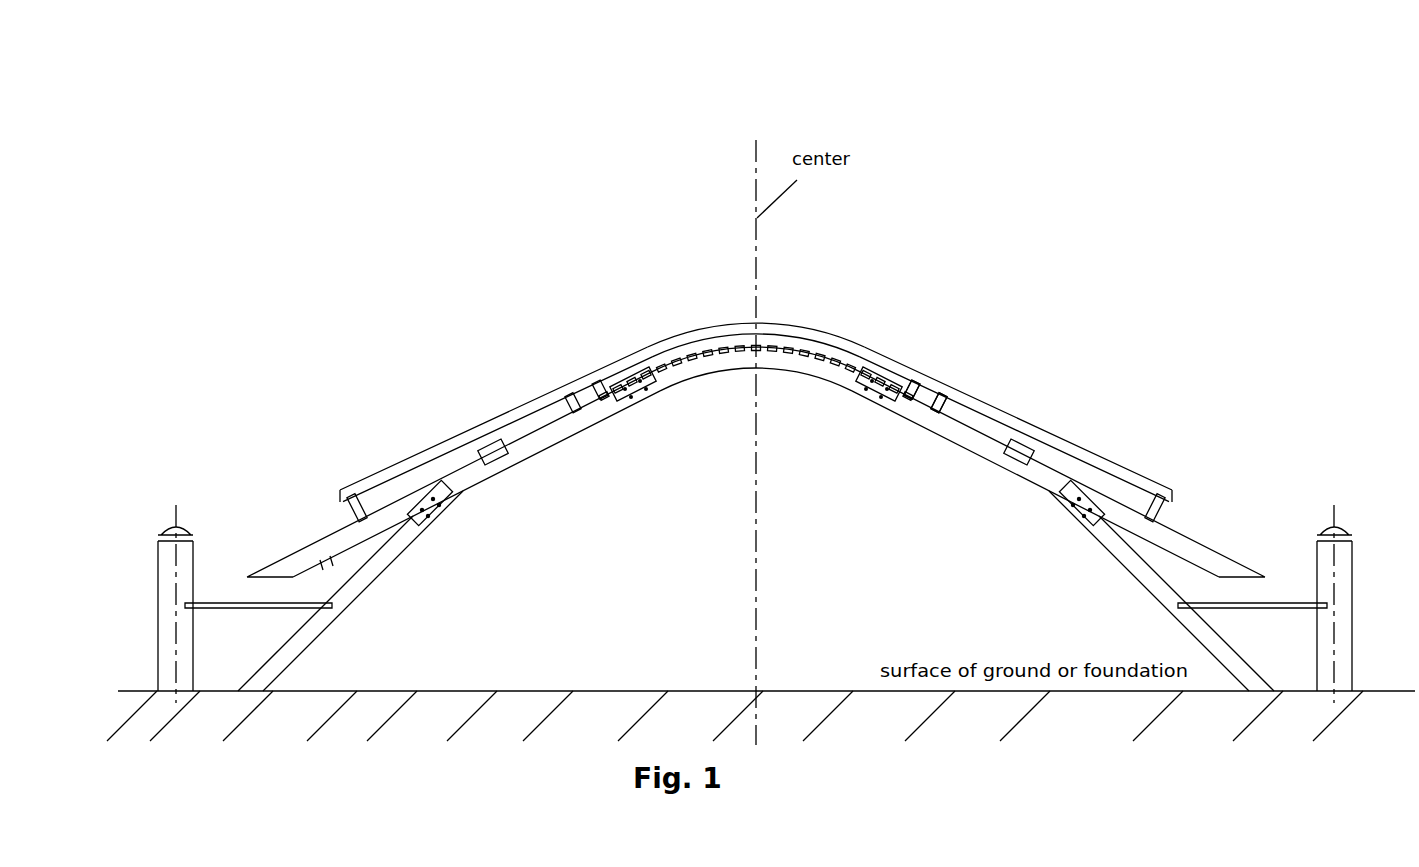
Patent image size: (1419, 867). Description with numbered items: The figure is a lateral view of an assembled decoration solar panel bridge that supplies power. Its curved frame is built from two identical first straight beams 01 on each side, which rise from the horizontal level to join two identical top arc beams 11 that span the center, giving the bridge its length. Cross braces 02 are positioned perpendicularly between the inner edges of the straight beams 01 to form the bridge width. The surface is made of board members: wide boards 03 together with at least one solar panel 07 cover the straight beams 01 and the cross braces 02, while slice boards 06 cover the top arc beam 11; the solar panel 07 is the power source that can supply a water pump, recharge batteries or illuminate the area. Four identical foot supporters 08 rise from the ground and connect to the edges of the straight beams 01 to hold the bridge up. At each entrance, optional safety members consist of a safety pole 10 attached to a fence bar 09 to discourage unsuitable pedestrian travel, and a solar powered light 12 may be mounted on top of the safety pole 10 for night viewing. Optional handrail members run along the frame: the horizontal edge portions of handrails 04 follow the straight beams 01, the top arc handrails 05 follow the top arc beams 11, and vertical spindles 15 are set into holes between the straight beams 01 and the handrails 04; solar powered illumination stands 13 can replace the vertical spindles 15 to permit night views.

The first straight beam 01 is at (285, 570).
The cross brace 02 is at (317, 542).
The wide board 03 is at (503, 442).
The edge portion of handrail 04 is at (515, 408).
The top arc handrail 05 is at (613, 355).
The slice board 06 is at (685, 352).
The solar panel 07 is at (967, 423).
The foot supporter 08 is at (1113, 523).
The fence bar 09 is at (1273, 603).
The safety pole 10 is at (1324, 572).
The top arc beam 11 is at (728, 357).
The solar powered light 12 is at (1340, 527).
The solar powered illumination stand 13 is at (756, 384).
The vertical spindle of the handrail 15 is at (933, 377).